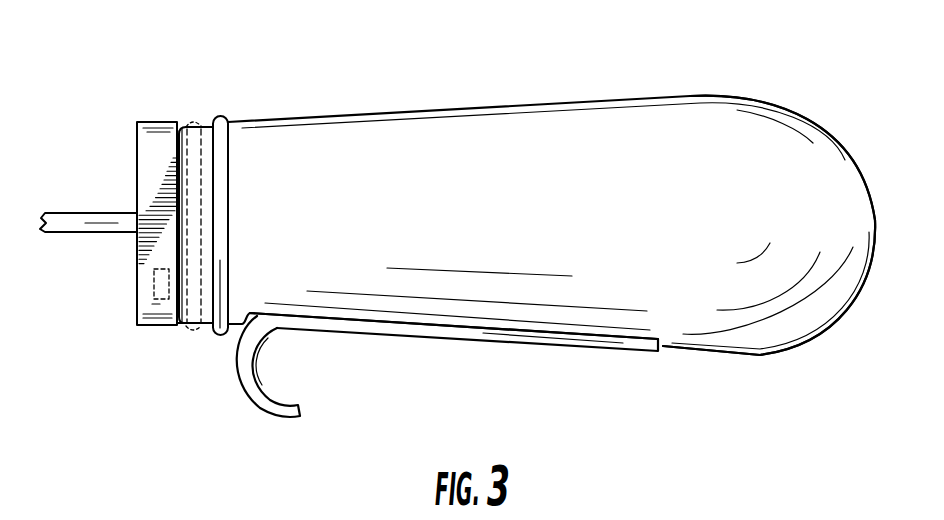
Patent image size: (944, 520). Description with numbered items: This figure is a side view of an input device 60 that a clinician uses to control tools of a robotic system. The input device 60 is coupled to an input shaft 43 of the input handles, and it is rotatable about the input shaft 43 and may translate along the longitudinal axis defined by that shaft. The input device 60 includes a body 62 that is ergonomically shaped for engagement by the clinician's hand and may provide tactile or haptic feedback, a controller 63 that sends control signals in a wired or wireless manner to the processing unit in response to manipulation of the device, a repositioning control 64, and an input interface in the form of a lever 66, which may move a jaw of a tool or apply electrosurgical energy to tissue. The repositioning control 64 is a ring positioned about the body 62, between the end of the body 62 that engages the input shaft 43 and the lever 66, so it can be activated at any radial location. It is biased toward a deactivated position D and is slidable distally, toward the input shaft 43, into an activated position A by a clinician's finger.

The input shaft 43 is at (78, 213).
The input device 60 is at (801, 60).
The body 62 is at (806, 190).
The controller 63 is at (150, 289).
The repositioning control 64 is at (170, 218).
The lever 66 is at (525, 345).
The activated position A is at (197, 118).
The deactivated position D is at (218, 117).